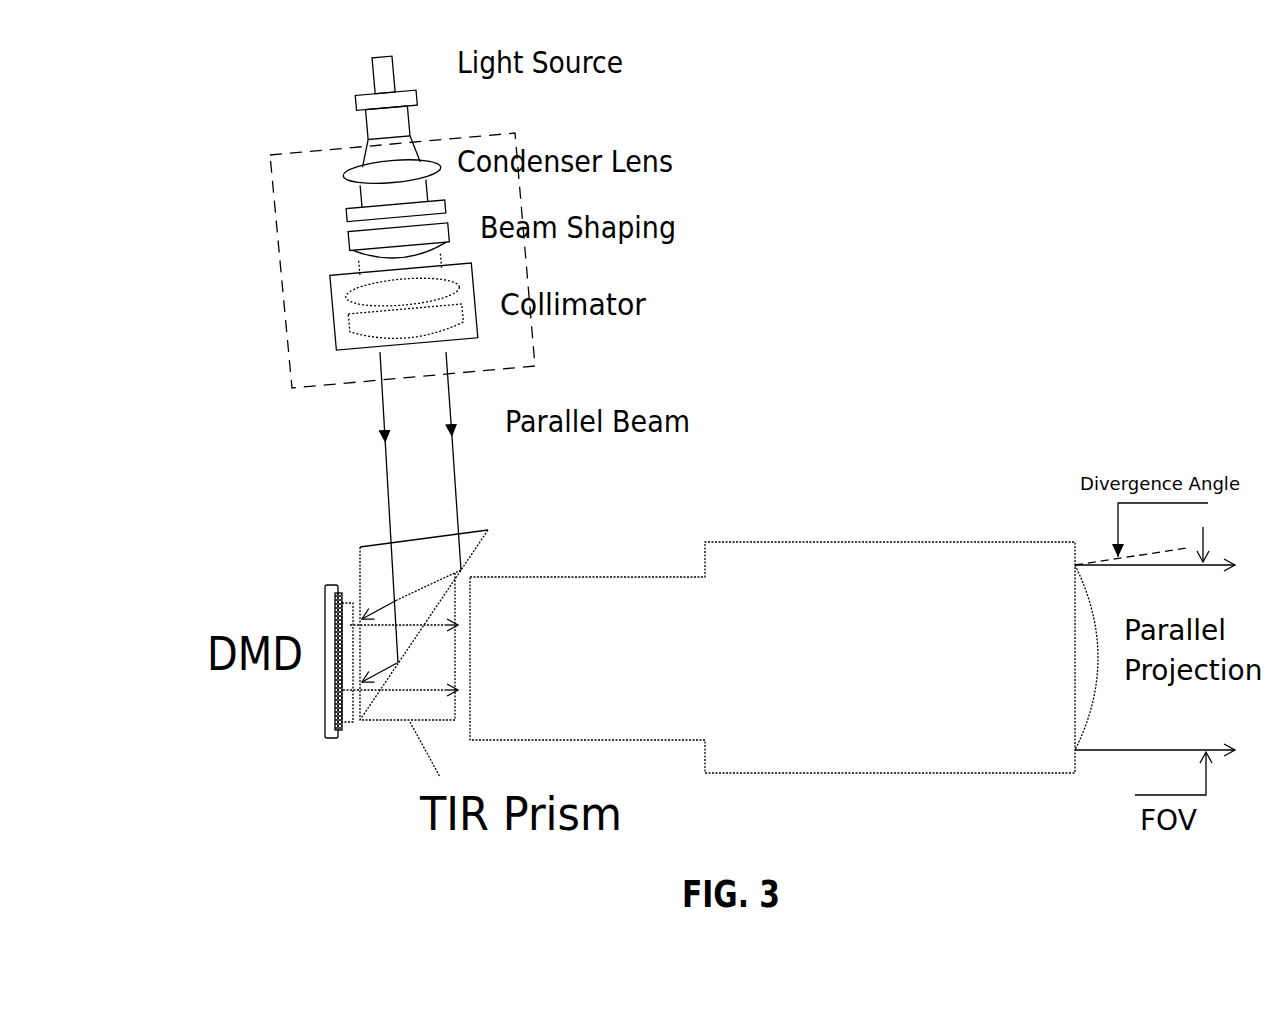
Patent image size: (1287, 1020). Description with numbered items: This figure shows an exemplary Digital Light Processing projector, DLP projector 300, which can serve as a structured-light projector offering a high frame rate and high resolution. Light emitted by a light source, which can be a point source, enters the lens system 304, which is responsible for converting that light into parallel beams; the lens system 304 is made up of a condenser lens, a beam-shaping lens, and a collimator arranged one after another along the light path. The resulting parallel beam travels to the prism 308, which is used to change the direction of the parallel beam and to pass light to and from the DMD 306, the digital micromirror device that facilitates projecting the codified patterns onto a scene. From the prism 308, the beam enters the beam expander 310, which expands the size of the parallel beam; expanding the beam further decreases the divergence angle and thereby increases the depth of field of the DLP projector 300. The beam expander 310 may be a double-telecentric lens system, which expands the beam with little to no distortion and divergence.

The DLP projector 300 is at (140, 284).
The lens system 304 is at (327, 148).
The DMD 306 is at (328, 585).
The prism 308 is at (473, 532).
The beam expander 310 is at (797, 540).